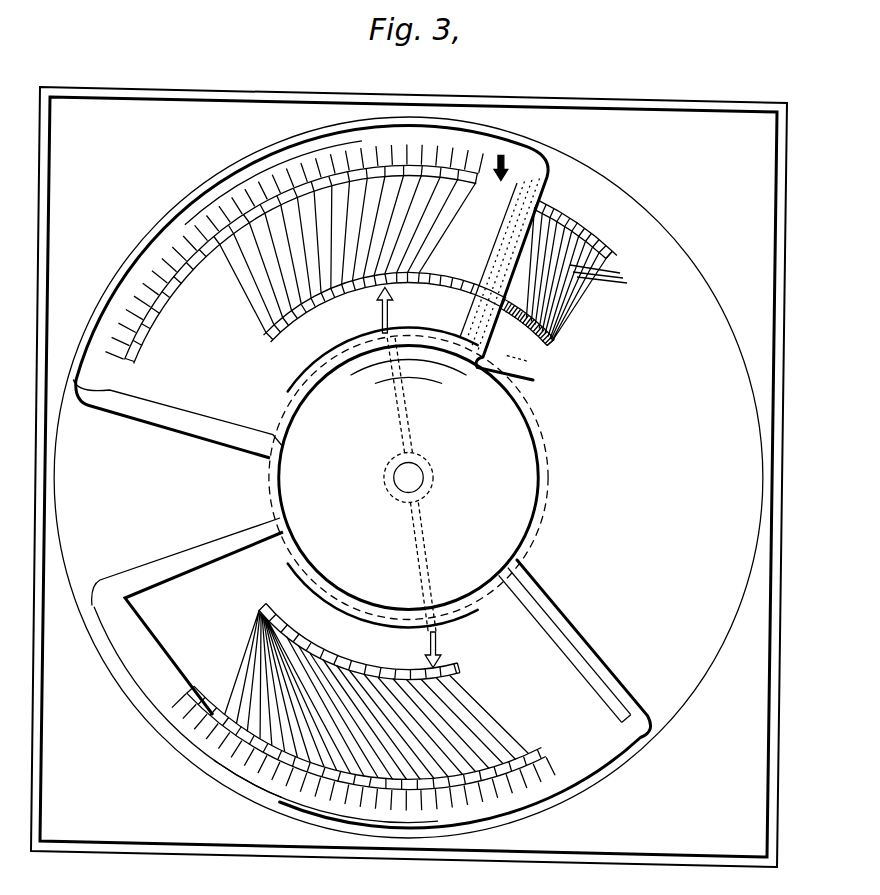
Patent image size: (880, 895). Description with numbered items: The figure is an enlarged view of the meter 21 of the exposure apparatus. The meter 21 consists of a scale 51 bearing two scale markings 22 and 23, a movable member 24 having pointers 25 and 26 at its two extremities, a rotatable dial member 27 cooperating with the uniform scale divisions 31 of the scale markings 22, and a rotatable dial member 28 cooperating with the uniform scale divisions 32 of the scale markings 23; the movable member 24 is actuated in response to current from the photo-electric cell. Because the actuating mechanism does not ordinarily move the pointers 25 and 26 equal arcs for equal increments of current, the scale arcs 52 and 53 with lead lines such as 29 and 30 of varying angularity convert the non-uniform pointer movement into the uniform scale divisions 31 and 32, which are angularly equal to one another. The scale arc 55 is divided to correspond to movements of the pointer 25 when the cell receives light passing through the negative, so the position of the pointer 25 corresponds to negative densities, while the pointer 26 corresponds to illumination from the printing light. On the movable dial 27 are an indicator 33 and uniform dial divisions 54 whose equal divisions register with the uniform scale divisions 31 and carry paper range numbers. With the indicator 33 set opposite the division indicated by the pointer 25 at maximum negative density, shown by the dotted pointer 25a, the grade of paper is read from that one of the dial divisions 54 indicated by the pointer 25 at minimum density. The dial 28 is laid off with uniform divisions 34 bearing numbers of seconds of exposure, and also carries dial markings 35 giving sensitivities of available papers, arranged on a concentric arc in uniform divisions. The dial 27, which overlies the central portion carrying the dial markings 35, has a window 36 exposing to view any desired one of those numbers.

The meter 21 is at (656, 102).
The scale markings 22 is at (582, 276).
The scale markings 23 is at (401, 715).
The movable member 24 is at (409, 484).
The pointer 25 is at (403, 311).
The dotted pointer 25a is at (545, 359).
The pointer 26 is at (452, 650).
The rotatable dial member 27 is at (344, 291).
The rotatable dial member 28 is at (381, 673).
The lead line 29 is at (612, 277).
The lead line 30 is at (569, 641).
The uniform scale divisions 31 is at (590, 213).
The uniform scale divisions 32 is at (569, 688).
The indicator 33 is at (515, 235).
The uniform divisions 34 is at (340, 718).
The dial markings 35 is at (428, 478).
The window 36 is at (383, 478).
The scale 51 is at (408, 477).
The scale arc 52 is at (663, 241).
The scale arc 53 is at (620, 691).
The uniform dial divisions 54 is at (312, 217).
The scale arc 55 is at (559, 329).